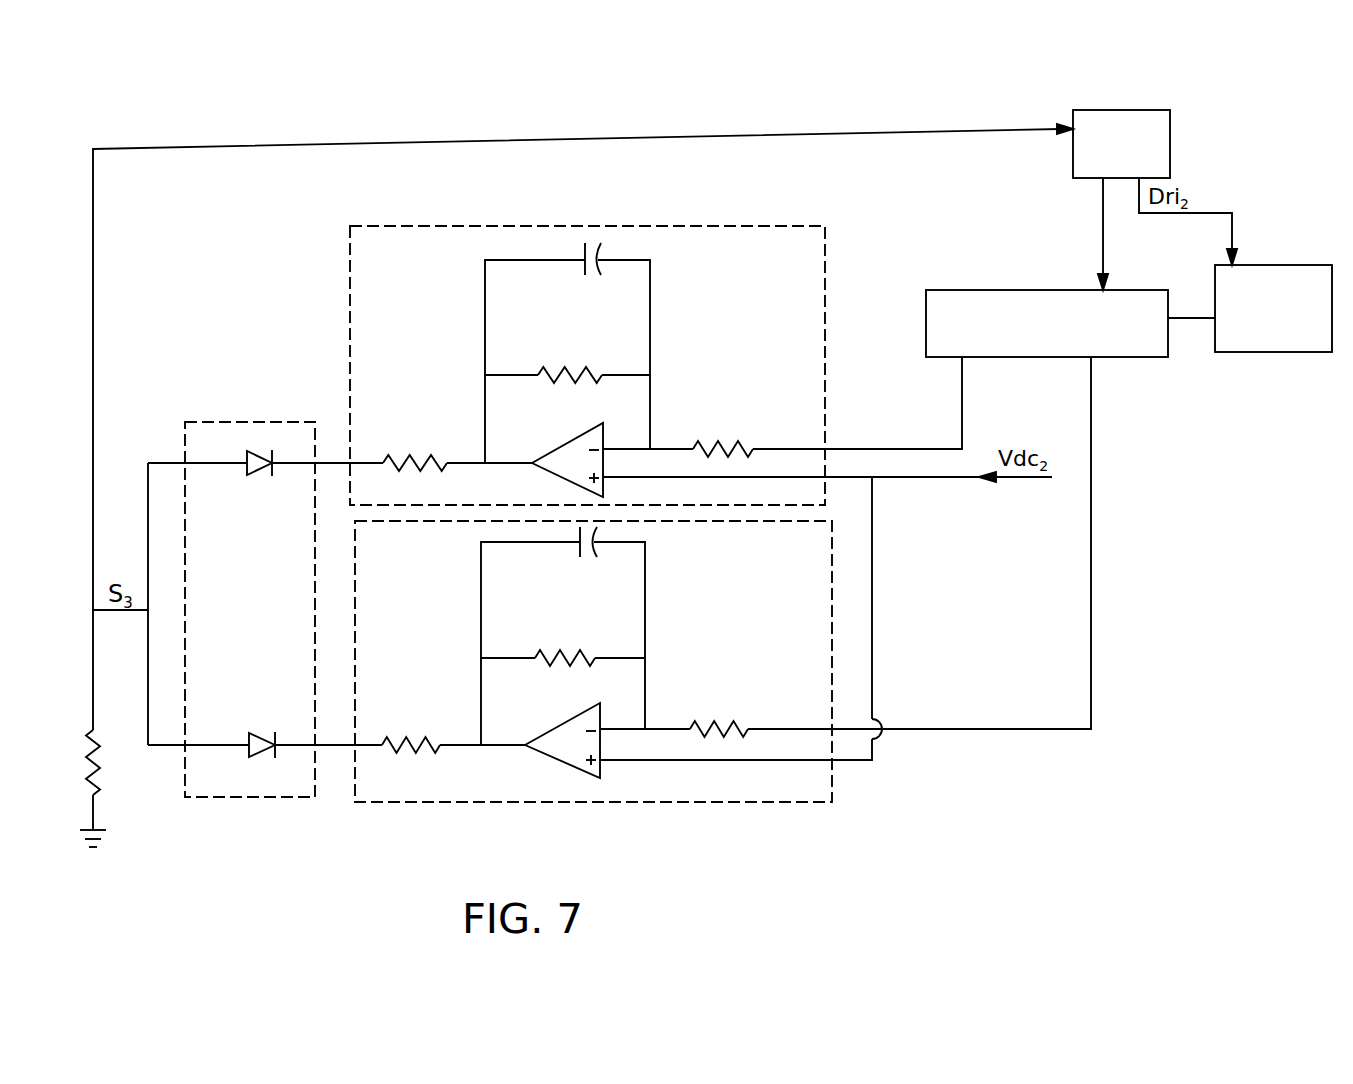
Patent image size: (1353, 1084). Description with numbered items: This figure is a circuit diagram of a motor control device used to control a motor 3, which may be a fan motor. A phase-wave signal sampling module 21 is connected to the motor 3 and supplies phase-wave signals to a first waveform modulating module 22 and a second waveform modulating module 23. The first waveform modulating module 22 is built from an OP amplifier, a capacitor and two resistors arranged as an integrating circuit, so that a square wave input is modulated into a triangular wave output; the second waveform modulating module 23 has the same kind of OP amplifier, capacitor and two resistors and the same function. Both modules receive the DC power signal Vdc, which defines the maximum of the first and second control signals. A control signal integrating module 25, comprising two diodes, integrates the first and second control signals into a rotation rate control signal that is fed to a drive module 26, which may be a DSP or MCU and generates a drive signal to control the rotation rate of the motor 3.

The motor 3 is at (1272, 265).
The phase-wave signal sampling module 21 is at (997, 290).
The first waveform modulating module 22 is at (646, 226).
The second waveform modulating module 23 is at (742, 802).
The control signal integrating module 25 is at (247, 422).
The drive module 26 is at (1080, 110).